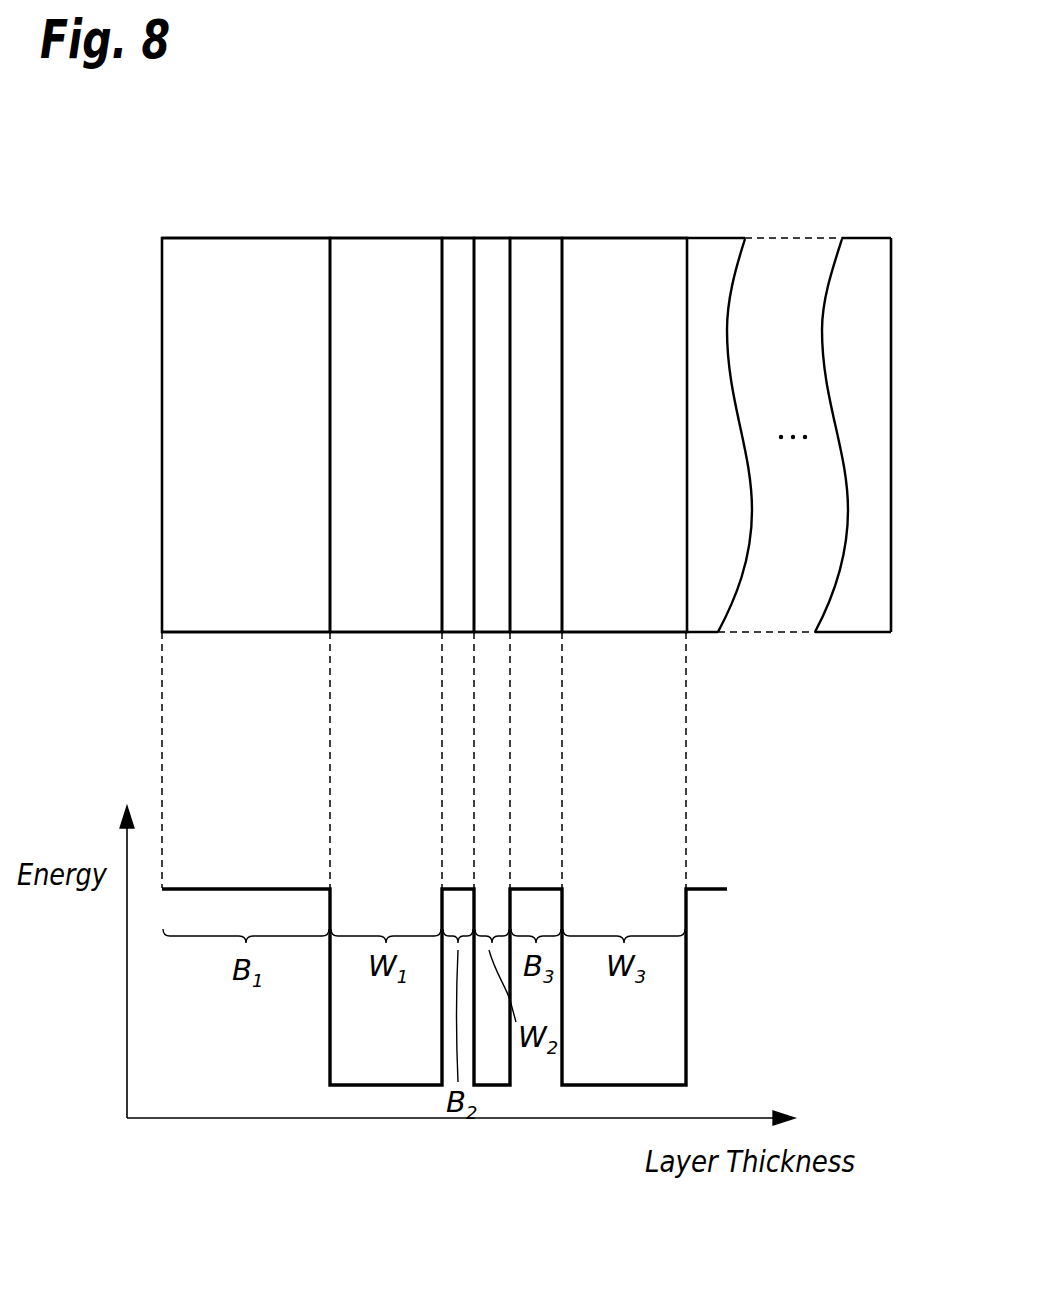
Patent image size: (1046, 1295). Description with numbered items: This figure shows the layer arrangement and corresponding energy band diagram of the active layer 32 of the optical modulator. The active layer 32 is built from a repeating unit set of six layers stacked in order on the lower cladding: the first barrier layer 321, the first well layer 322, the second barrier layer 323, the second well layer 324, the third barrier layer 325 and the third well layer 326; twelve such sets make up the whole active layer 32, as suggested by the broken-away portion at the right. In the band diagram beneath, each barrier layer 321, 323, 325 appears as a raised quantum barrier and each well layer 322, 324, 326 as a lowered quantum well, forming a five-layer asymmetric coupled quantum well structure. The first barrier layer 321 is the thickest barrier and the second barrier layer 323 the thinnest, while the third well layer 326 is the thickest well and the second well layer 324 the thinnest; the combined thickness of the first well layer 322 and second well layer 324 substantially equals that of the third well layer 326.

The active layer 32 is at (808, 132).
The first barrier layer 321 is at (252, 250).
The first well layer 322 is at (377, 250).
The second barrier layer 323 is at (455, 248).
The second well layer 324 is at (490, 248).
The third barrier layer 325 is at (538, 248).
The third well layer 326 is at (622, 248).